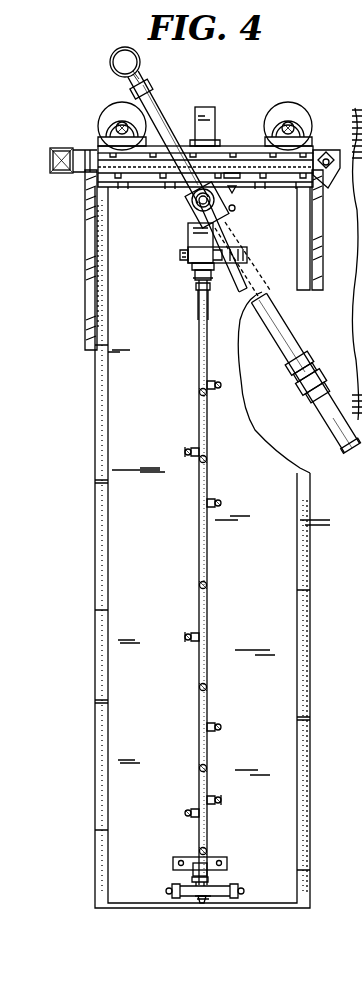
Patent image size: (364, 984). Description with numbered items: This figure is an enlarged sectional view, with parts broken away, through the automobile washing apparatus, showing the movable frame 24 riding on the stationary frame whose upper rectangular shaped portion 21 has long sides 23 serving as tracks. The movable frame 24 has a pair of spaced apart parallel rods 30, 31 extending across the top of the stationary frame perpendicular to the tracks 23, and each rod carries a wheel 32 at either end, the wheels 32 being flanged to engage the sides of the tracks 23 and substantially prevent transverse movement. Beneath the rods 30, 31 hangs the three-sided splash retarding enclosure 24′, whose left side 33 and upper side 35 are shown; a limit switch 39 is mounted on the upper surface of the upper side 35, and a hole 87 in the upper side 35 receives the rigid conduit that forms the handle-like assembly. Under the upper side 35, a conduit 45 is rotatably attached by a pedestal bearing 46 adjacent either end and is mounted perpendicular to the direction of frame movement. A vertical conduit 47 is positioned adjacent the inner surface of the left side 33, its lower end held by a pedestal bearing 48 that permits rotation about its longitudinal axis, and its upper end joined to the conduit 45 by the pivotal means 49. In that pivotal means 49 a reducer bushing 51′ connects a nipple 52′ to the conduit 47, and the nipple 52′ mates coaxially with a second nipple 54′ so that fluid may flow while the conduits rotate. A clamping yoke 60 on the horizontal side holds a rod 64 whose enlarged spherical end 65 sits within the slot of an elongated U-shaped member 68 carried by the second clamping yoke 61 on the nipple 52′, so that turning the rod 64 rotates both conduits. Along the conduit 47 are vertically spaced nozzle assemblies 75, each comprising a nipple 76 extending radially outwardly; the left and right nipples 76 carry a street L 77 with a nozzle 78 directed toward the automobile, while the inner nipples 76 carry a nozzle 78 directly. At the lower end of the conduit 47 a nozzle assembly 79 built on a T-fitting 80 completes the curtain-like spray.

The upper rectangular shaped portion 21 is at (65, 174).
The long sides 23 is at (327, 152).
The movable frame 24 is at (94, 623).
The splash retarding enclosure 24′ is at (96, 543).
The rod 30 is at (294, 122).
The rod 31 is at (110, 124).
The wheel 32 is at (103, 107).
The left side 33 is at (125, 465).
The upper side 35 is at (150, 183).
The limit switch 39 is at (210, 107).
The conduit 45 is at (193, 213).
The pedestal bearing 46 is at (227, 190).
The conduit 47 is at (197, 548).
The pedestal bearing 48 is at (194, 862).
The pivotal means 49 is at (173, 251).
The reducer bushing 51′ is at (197, 320).
The nipple 52′ is at (197, 281).
The nipple 54′ is at (193, 266).
The clamping yoke 60 is at (236, 209).
The clamping yoke 61 is at (211, 277).
The rod 64 is at (240, 237).
The enlarged spherical end 65 is at (247, 257).
The U-shaped member 68 is at (270, 297).
The nozzle assembly 75 is at (184, 452).
The nipple 76 is at (210, 396).
The street L 77 is at (214, 382).
The nozzle 78 is at (221, 385).
The nozzle assembly 79 is at (200, 903).
The T-fitting 80 is at (208, 899).
The hole 87 is at (230, 187).